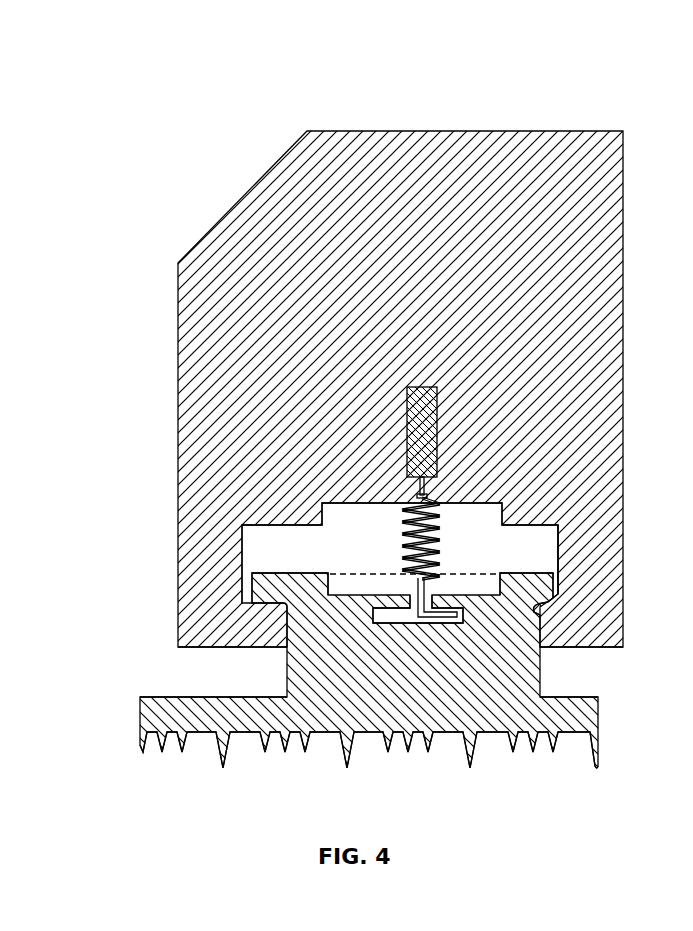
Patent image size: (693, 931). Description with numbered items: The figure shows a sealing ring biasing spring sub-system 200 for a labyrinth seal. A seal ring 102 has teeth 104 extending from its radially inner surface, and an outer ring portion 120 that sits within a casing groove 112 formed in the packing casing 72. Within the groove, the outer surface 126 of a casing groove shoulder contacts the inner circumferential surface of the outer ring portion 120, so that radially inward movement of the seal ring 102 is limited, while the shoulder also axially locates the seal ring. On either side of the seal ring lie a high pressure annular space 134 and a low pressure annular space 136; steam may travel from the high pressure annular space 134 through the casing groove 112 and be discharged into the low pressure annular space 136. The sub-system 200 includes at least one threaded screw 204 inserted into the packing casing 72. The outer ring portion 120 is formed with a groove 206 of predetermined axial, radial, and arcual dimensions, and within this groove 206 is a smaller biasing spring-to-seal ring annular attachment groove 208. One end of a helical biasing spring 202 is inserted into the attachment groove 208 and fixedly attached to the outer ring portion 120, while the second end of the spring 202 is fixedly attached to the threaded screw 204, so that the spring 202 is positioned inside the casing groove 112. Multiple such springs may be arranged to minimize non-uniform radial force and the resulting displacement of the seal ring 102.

The sealing ring biasing spring sub-system 200 is at (188, 80).
The packing casing 72 is at (610, 223).
The casing groove 112 is at (277, 548).
The outer ring portion 120 is at (553, 592).
The outer surface of casing groove shoulder 126 is at (560, 600).
The seal ring 102 is at (455, 715).
The teeth 104 is at (595, 765).
The groove 206 is at (350, 588).
The biasing spring-to-seal ring annular attachment groove 208 is at (400, 620).
The threaded screw 204 is at (437, 420).
The helical biasing spring 202 is at (440, 527).
The high pressure annular space 134 is at (185, 672).
The low pressure annular space 136 is at (573, 668).